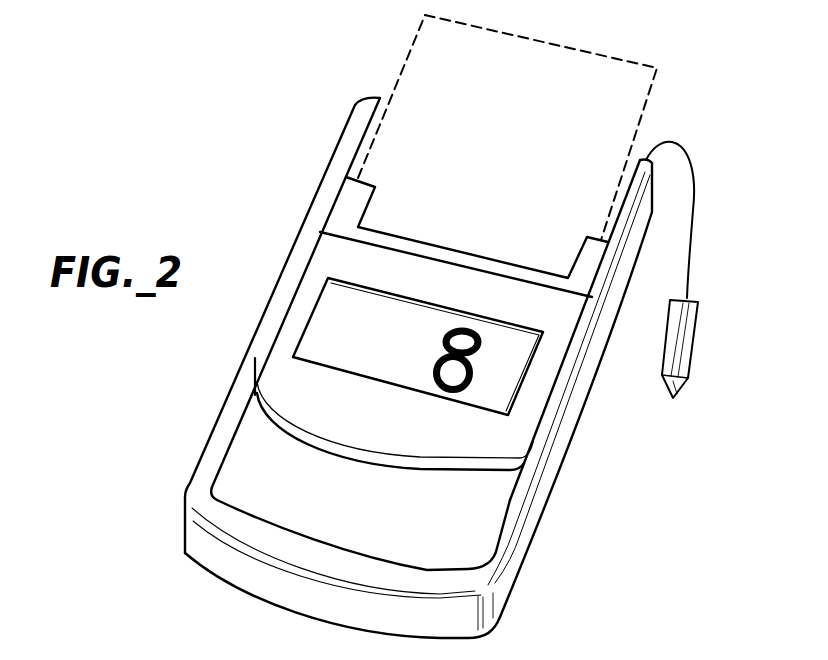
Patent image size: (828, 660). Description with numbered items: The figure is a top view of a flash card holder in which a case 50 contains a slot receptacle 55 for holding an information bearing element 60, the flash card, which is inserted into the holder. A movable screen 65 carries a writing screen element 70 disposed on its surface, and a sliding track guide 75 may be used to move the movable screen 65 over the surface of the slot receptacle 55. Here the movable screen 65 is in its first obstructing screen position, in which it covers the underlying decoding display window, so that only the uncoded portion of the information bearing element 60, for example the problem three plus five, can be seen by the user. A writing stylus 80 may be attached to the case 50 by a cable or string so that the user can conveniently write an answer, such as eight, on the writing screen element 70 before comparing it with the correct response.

The case 50 is at (183, 538).
The slot receptacle 55 is at (357, 190).
The information bearing element 60 is at (650, 104).
The movable screen 65 is at (278, 375).
The writing screen element 70 is at (340, 313).
The sliding track guide 75 is at (222, 468).
The writing stylus 80 is at (698, 352).